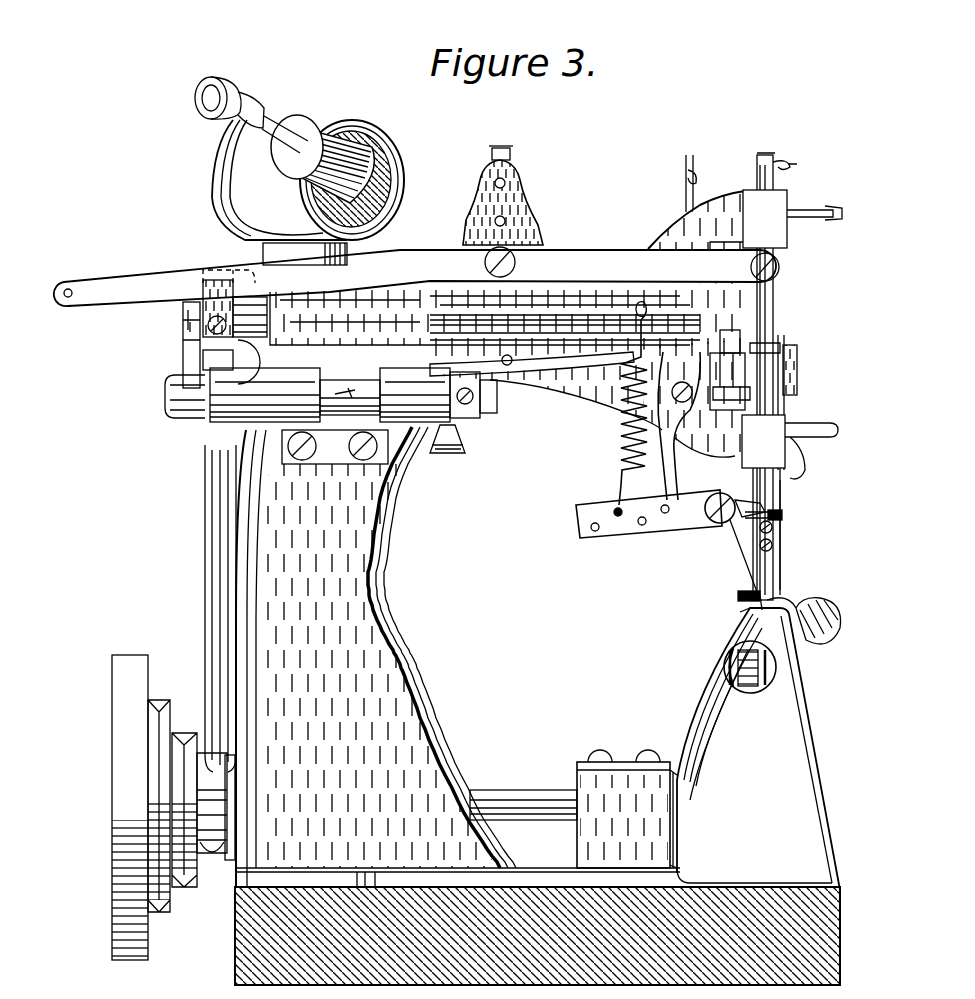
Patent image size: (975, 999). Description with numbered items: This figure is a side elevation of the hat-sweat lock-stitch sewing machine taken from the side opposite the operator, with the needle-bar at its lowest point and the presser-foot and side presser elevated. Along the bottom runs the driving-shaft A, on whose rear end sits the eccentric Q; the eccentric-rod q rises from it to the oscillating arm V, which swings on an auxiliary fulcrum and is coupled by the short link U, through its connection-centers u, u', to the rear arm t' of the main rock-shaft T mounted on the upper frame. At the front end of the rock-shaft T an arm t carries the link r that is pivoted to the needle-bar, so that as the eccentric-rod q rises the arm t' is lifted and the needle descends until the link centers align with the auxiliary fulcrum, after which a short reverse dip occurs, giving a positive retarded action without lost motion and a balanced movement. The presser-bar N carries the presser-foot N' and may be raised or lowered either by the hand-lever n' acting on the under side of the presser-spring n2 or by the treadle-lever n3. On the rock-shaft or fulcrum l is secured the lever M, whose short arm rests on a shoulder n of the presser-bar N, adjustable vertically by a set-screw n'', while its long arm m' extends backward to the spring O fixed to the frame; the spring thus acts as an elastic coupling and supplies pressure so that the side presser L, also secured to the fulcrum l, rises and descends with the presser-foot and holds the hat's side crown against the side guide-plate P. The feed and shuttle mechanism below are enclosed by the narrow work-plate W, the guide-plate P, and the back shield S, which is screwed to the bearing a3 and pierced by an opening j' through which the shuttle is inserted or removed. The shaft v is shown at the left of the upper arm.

The treadle-lever n3 is at (416, 276).
The rear arm of the rock-shaft t' is at (235, 303).
The connection-center of the link u' is at (180, 321).
The short link U is at (232, 352).
The oscillating arm V is at (191, 345).
The horizontal shaft v is at (322, 410).
The connection-center of the link u is at (345, 392).
The rock-shaft T is at (507, 370).
The presser-spring n2 is at (532, 359).
The arm of the rock-shaft t is at (781, 376).
The link r is at (730, 381).
The presser-bar N is at (790, 505).
The presser-foot N' is at (732, 595).
The spring O is at (622, 403).
The hand-lever n' is at (696, 420).
The lever M is at (649, 521).
The long arm of the lever m' is at (606, 513).
The rock-shaft or fulcrum l is at (712, 516).
The shoulder n is at (770, 517).
The set-screw n'' is at (786, 536).
The side guide-plate P is at (758, 749).
The back shield S is at (715, 725).
The work-plate W is at (742, 608).
The opening in the shield j' is at (750, 669).
The side presser L is at (804, 613).
The driving-shaft A is at (523, 799).
The bearing a3 is at (627, 809).
The eccentric Q is at (173, 807).
The eccentric-rod q is at (211, 608).